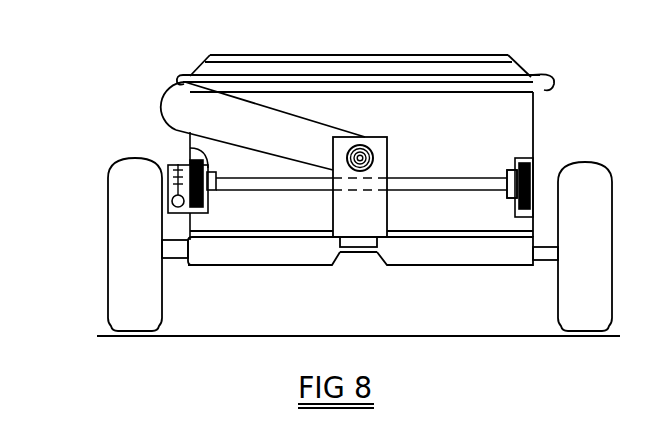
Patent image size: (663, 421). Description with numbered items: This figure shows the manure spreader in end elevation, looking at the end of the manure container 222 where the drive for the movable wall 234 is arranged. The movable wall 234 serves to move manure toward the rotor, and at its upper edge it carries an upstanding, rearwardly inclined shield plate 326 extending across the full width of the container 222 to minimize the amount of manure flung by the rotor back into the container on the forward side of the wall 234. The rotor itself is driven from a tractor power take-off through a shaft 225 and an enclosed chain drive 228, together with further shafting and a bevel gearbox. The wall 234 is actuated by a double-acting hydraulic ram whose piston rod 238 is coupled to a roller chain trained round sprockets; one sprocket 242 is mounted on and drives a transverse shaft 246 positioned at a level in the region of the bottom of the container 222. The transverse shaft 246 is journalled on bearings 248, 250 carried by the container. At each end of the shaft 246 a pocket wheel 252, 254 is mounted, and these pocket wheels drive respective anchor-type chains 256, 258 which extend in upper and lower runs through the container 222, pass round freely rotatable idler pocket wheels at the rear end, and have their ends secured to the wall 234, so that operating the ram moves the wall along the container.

The container 222 is at (533, 108).
The shaft 225 is at (374, 157).
The enclosed chain drive 228 is at (166, 108).
The movable wall 234 is at (524, 76).
The shield plate 326 is at (229, 67).
The piston rod 238 is at (174, 204).
The sprocket 242 is at (176, 170).
The transverse shaft 246 is at (228, 184).
The bearing 248 is at (238, 178).
The bearing 250 is at (507, 194).
The pocket wheel 252 is at (190, 150).
The pocket wheel 254 is at (509, 240).
The anchor-type chain 256 is at (188, 266).
The anchor-type chain 258 is at (532, 164).